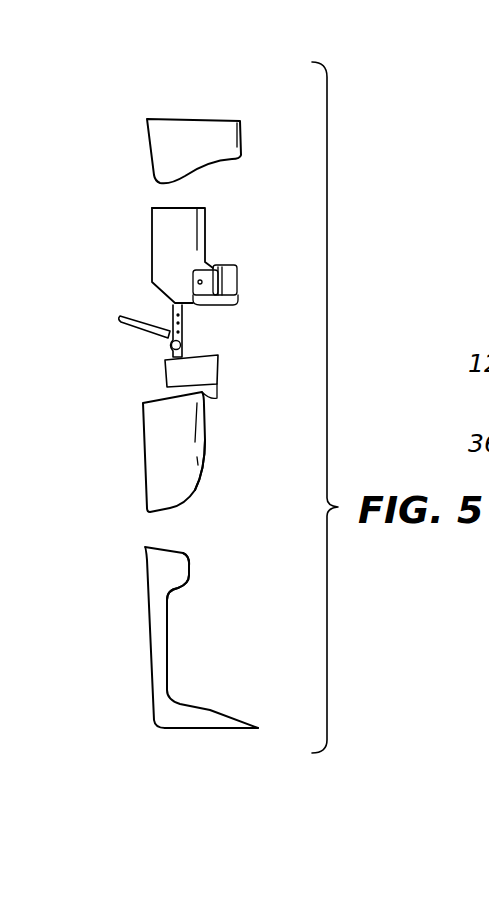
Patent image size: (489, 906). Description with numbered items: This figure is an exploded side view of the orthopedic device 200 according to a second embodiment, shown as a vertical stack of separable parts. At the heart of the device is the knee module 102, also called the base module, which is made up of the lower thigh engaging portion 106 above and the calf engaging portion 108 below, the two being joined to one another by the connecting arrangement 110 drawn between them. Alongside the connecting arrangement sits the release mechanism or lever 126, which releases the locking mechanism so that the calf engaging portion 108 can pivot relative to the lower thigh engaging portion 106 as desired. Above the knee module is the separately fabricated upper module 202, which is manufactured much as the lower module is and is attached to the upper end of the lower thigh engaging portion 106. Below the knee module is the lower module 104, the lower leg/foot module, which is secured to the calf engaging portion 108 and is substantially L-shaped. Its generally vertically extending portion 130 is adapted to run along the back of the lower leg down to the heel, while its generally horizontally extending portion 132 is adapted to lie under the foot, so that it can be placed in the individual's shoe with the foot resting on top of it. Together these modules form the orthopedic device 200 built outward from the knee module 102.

The upper module 202 is at (191, 117).
The lower thigh engaging portion 106 is at (205, 228).
The connecting arrangement 110 is at (187, 337).
The lever 126 is at (128, 336).
The knee module 102 is at (205, 433).
The calf engaging portion 108 is at (203, 470).
The lower module 104 is at (169, 653).
The vertically extending portion 130 is at (170, 607).
The horizontally extending portion 132 is at (194, 728).
The orthopedic device 200 is at (124, 385).